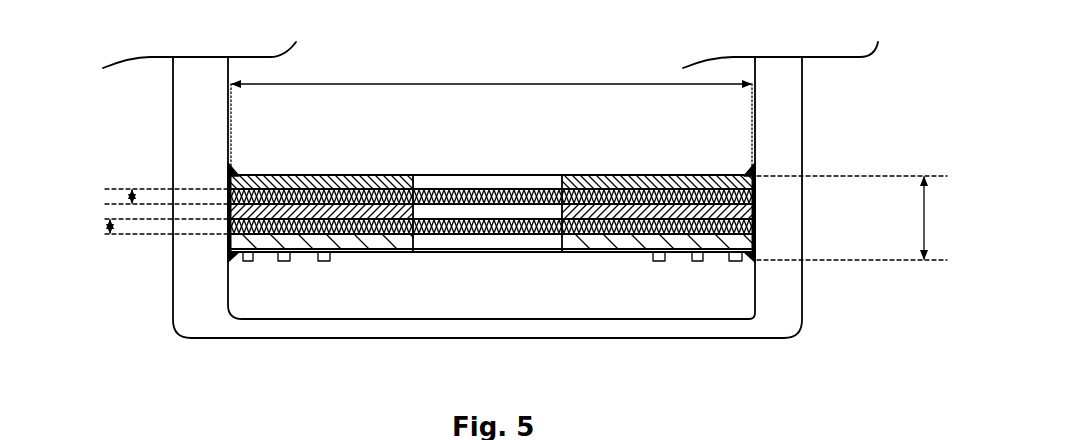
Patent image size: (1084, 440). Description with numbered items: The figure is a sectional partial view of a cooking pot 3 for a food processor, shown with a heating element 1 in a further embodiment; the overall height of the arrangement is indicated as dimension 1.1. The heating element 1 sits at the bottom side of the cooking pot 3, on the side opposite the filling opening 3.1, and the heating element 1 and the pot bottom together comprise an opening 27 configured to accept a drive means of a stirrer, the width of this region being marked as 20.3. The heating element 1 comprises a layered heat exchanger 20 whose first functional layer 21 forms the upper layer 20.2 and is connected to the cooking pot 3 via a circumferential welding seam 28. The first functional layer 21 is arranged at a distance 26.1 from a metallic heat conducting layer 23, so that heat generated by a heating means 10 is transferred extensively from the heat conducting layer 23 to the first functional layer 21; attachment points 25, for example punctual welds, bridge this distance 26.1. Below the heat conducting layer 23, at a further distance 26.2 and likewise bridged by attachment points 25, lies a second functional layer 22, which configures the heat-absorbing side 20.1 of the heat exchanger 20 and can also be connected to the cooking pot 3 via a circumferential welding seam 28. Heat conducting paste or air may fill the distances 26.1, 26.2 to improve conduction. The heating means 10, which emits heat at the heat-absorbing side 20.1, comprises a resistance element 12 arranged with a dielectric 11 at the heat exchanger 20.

The heating element 1 is at (360, 72).
The module height 1.1 is at (925, 212).
The cooking pot 3 is at (790, 107).
The filling opening 3.1 is at (652, 59).
The heating means 10 is at (670, 296).
The dielectric 11 is at (268, 254).
The resistance element 12 is at (284, 262).
The heat exchanger 20 is at (480, 253).
The heat-absorbing side 20.1 is at (355, 256).
The top layer 20.2 is at (334, 174).
The stack width 20.3 is at (548, 83).
The first functional layer 21 is at (228, 188).
The second functional layer 22 is at (228, 243).
The heat conducting layer 23 is at (228, 207).
The attachment point 25 is at (757, 193).
The distance 26.1 is at (132, 195).
The distance 26.2 is at (105, 226).
The opening 27 is at (511, 157).
The circumferential welding seam 28 is at (757, 171).